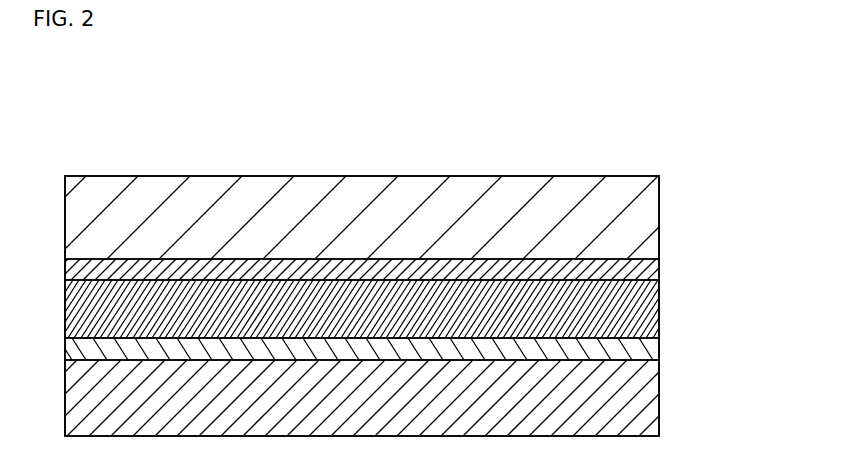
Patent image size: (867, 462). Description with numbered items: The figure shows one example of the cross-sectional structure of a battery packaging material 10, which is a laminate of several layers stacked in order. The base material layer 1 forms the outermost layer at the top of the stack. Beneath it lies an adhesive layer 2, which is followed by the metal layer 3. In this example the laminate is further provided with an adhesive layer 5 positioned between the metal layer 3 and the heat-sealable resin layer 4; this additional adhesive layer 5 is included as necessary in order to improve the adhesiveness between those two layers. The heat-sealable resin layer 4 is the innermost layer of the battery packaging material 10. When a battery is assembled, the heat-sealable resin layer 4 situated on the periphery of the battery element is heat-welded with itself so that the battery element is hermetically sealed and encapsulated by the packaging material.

The battery packaging material 10 is at (383, 152).
The base material layer 1 is at (659, 218).
The adhesive layer 2 is at (659, 270).
The metal layer 3 is at (659, 317).
The adhesive layer 5 is at (659, 352).
The heat-sealable resin layer 4 is at (659, 393).